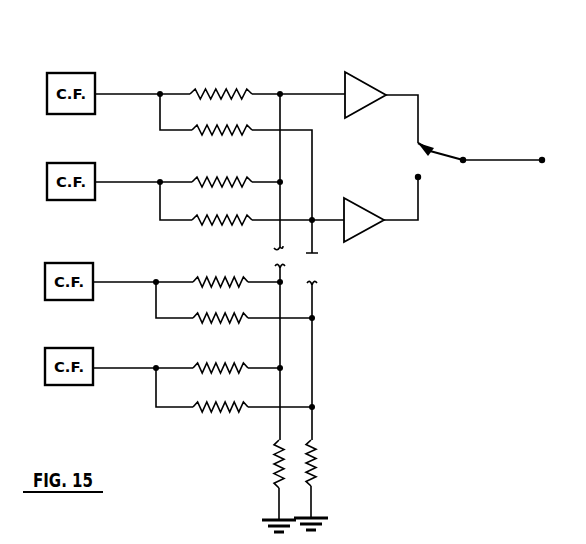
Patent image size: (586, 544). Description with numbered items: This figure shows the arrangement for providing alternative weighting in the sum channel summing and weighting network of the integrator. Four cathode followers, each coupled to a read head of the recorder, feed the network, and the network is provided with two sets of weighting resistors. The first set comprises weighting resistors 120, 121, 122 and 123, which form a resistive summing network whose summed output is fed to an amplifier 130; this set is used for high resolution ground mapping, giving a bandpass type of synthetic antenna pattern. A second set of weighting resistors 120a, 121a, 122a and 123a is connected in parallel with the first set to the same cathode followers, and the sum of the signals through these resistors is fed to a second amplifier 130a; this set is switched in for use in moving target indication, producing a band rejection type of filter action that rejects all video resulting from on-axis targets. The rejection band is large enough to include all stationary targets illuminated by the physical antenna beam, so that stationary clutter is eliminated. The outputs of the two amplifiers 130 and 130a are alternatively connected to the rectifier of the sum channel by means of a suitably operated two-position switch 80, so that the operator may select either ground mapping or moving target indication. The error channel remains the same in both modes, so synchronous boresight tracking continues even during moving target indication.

The weighting resistor 120 is at (229, 90).
The weighting resistor 120a is at (209, 127).
The weighting resistor 121 is at (232, 178).
The weighting resistor 121a is at (222, 217).
The weighting resistor 122 is at (237, 280).
The weighting resistor 122a is at (215, 314).
The weighting resistor 123 is at (222, 366).
The weighting resistor 123a is at (220, 404).
The amplifier 130 is at (368, 93).
The amplifier 130a is at (348, 207).
The two-position switch 80 is at (442, 152).